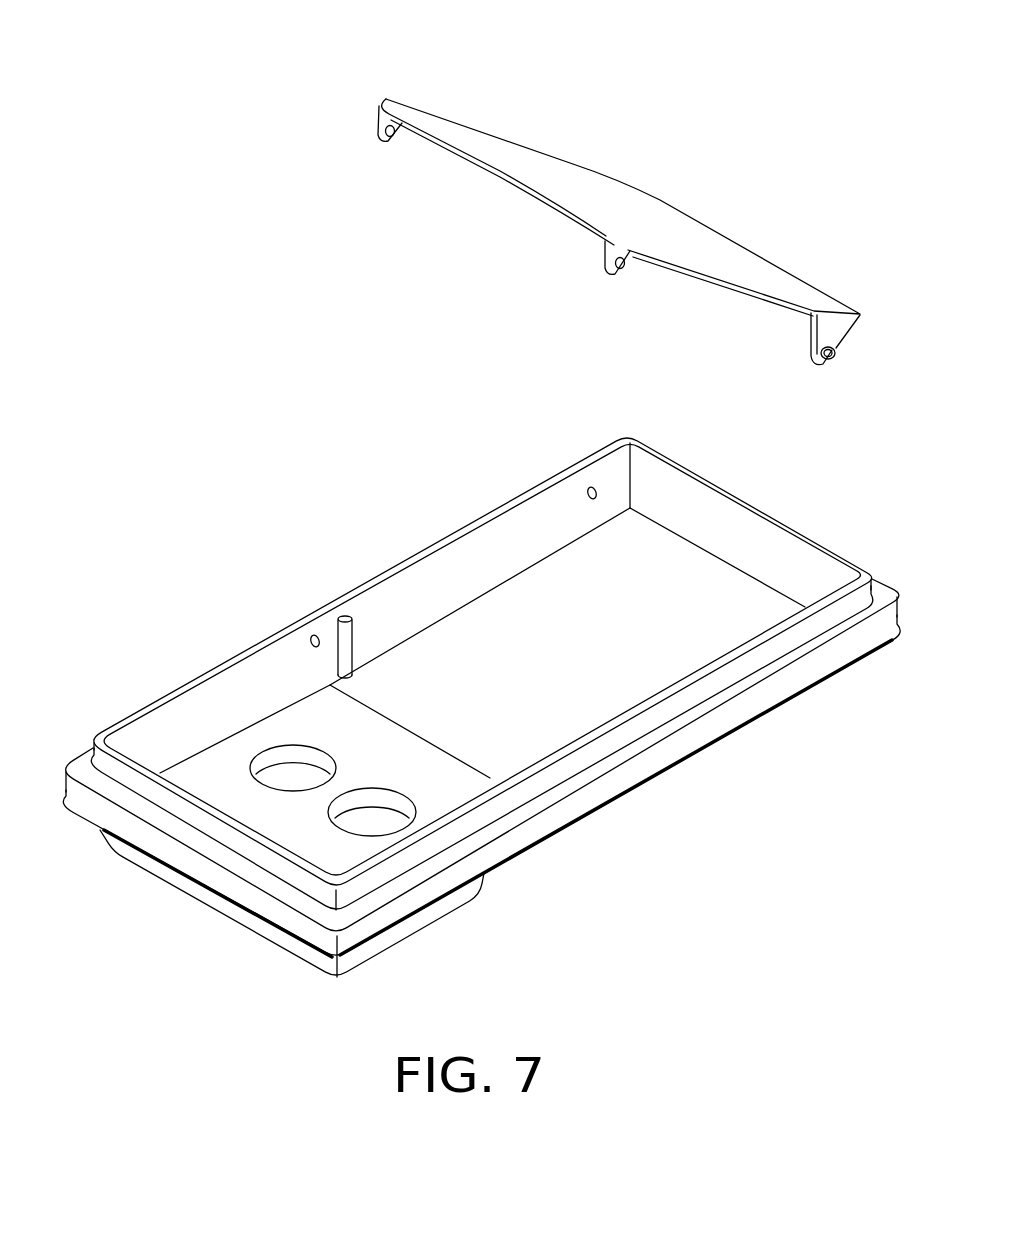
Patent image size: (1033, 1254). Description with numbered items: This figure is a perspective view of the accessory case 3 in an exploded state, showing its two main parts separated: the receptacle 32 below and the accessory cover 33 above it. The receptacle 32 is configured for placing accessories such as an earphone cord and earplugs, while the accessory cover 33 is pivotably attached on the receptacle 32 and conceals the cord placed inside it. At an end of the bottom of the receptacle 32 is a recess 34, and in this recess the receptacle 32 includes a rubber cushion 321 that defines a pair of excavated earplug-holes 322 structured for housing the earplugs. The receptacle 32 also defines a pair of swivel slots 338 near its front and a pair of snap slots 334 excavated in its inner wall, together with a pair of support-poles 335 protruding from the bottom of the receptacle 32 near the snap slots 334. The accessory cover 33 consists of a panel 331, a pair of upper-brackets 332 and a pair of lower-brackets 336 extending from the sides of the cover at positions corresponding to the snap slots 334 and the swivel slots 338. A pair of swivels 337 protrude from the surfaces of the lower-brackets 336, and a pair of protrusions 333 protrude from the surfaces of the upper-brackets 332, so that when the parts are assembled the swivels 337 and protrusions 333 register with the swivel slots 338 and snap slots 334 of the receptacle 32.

The accessory case 3 is at (475, 516).
The accessory cover 33 is at (749, 224).
The panel 331 is at (591, 170).
The upper-brackets 332 is at (389, 133).
The protrusions 333 is at (614, 270).
The lower-brackets 336 is at (812, 322).
The swivels 337 is at (837, 352).
The receptacle 32 is at (761, 484).
The rubber cushion 321 is at (315, 728).
The earplug-holes 322 is at (378, 810).
The snap slots 334 is at (313, 635).
The support-poles 335 is at (345, 615).
The swivel slots 338 is at (591, 487).
The recess 34 is at (346, 966).